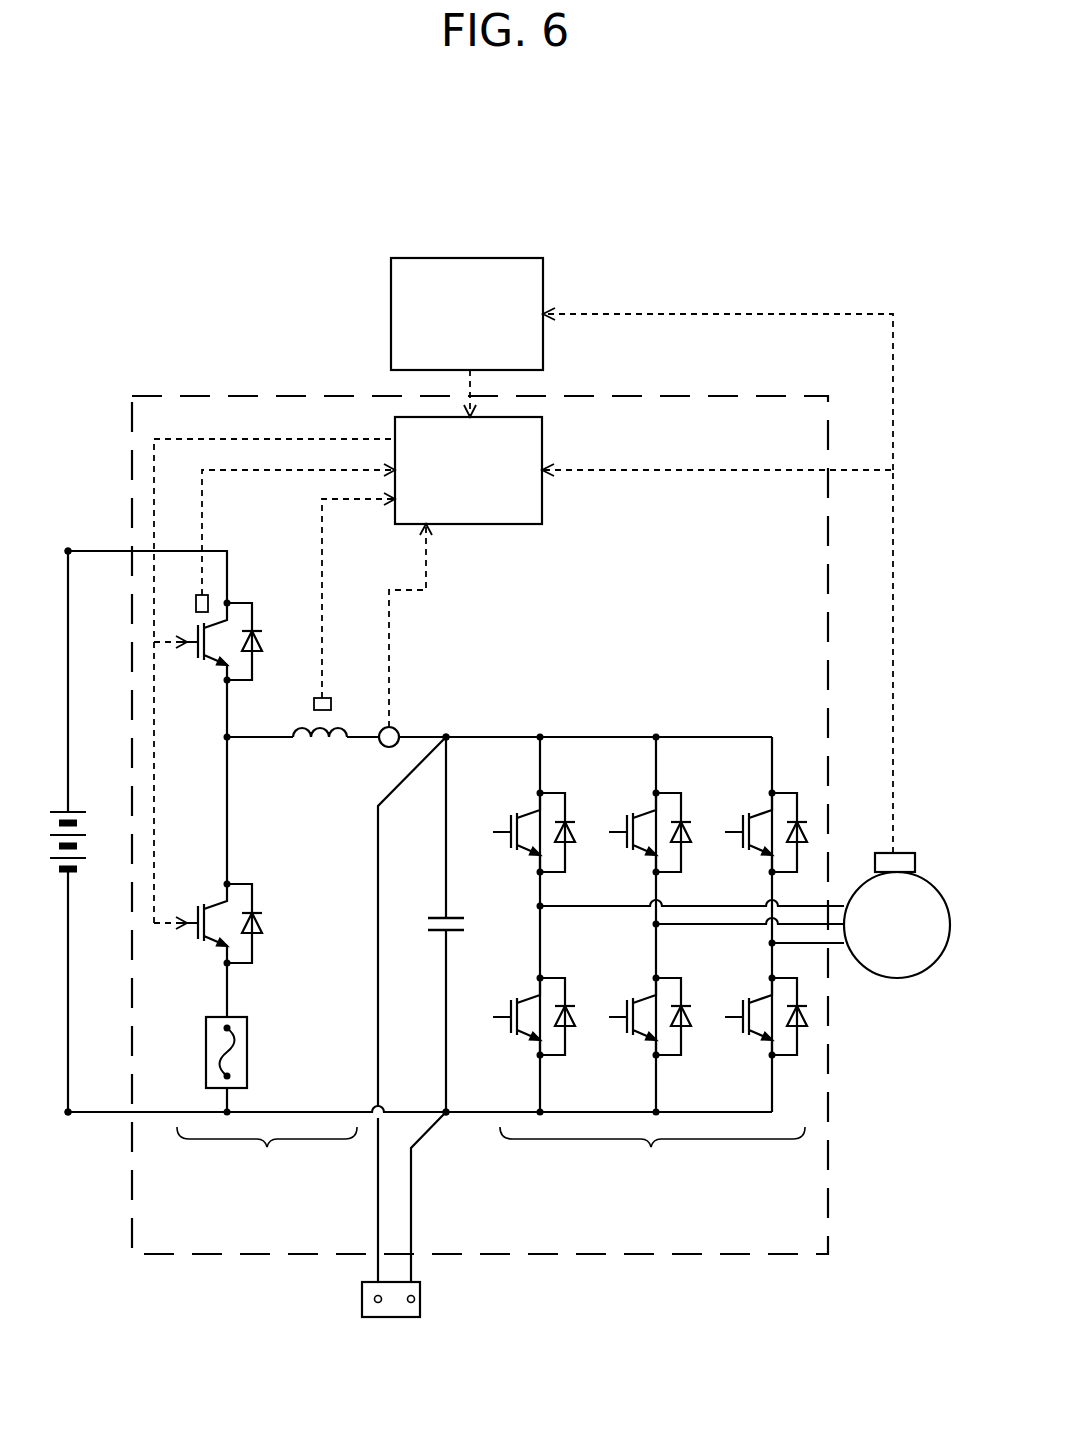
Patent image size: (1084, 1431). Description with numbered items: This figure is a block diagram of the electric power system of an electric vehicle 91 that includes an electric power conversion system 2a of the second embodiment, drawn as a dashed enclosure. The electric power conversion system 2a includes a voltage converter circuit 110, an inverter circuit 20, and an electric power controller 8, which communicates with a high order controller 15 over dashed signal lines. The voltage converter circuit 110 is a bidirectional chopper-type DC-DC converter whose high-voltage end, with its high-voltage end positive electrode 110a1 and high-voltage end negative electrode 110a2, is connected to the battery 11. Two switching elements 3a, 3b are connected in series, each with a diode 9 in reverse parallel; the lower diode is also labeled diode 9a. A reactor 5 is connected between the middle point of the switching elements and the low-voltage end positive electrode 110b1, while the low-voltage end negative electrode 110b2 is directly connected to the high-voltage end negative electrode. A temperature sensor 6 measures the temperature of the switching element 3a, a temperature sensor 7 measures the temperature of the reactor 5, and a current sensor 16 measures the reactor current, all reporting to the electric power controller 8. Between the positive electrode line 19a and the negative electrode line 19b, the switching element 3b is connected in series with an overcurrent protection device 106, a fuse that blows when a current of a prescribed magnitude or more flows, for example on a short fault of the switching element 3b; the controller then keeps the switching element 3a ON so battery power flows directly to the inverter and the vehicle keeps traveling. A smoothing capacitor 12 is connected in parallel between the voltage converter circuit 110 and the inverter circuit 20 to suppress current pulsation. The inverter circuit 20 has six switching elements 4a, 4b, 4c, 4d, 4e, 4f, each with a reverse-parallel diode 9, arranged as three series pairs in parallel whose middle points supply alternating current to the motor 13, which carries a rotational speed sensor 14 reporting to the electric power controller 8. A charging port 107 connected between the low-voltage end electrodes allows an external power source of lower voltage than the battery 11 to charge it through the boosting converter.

The electric vehicle 91 is at (722, 213).
The electric power conversion system 2a is at (232, 398).
The high order controller 15 is at (391, 283).
The electric power controller 8 is at (473, 524).
The high-voltage end positive electrode 110a1 is at (69, 550).
The high-voltage end negative electrode 110a2 is at (69, 1114).
The battery 11 is at (78, 811).
The temperature sensor 6 is at (200, 595).
The temperature sensor 7 is at (332, 700).
The diode 9 is at (254, 630).
The diode 9a is at (256, 913).
The switching element 3a is at (213, 658).
The switching element 3b is at (213, 939).
The reactor 5 is at (321, 748).
The current sensor 16 is at (396, 729).
The positive electrode line 19a is at (262, 739).
The negative electrode line 19b is at (295, 1110).
The low-voltage end positive electrode 110b1 is at (449, 736).
The low-voltage end negative electrode 110b2 is at (448, 1114).
The smoothing capacitor 12 is at (458, 918).
The overcurrent protection device 106 is at (248, 1032).
The voltage converter circuit 110 is at (267, 1151).
The inverter circuit 20 is at (652, 1151).
The switching element 4a is at (509, 832).
The switching element 4b is at (509, 1017).
The switching element 4c is at (625, 832).
The switching element 4d is at (625, 1017).
The switching element 4e is at (741, 832).
The switching element 4f is at (741, 1017).
The motor 13 is at (897, 978).
The rotational speed sensor 14 is at (907, 853).
The charging port 107 is at (420, 1290).